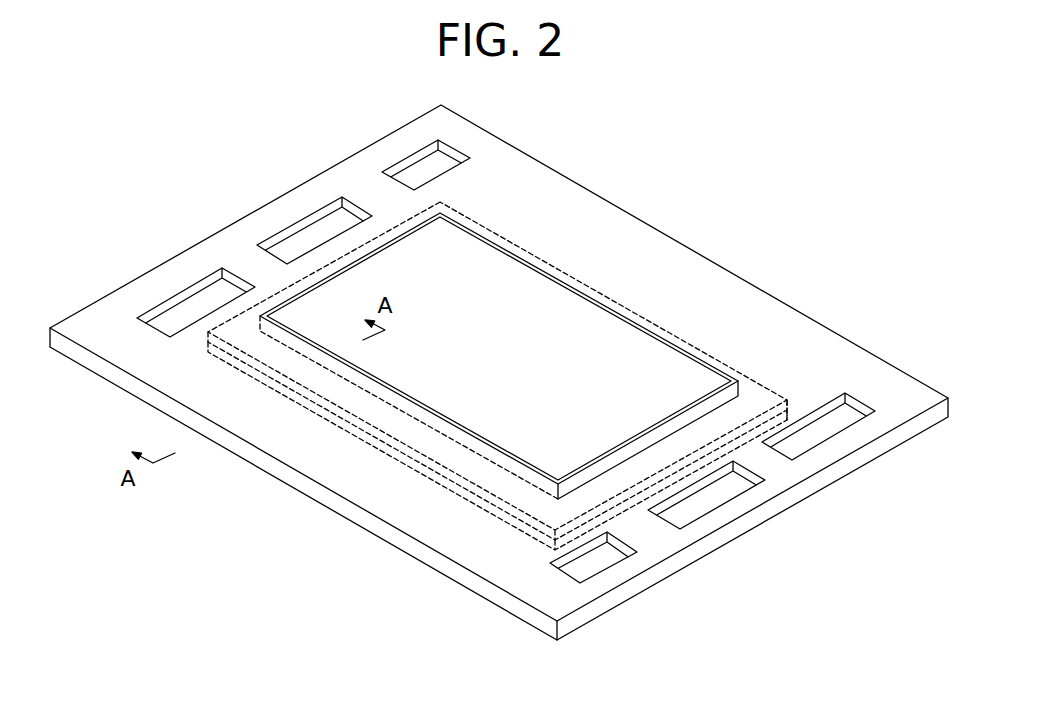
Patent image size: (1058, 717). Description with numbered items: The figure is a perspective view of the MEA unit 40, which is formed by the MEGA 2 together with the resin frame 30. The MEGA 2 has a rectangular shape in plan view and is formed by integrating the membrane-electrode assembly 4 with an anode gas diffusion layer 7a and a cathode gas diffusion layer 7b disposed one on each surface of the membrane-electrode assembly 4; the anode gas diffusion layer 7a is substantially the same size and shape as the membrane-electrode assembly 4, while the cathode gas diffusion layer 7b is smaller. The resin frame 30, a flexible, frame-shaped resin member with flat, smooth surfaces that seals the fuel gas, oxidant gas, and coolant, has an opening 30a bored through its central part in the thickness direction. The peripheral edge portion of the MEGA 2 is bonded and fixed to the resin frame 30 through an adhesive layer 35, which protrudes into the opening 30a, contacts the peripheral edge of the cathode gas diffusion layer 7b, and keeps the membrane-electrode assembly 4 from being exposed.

The MEGA 2 is at (514, 316).
The membrane-electrode assembly 4 is at (642, 473).
The anode gas diffusion layer 7a is at (463, 497).
The cathode gas diffusion layer 7b is at (491, 372).
The resin frame 30 is at (308, 190).
The opening 30a is at (304, 286).
The adhesive layer 35 is at (790, 410).
The MEA unit 40 is at (826, 186).